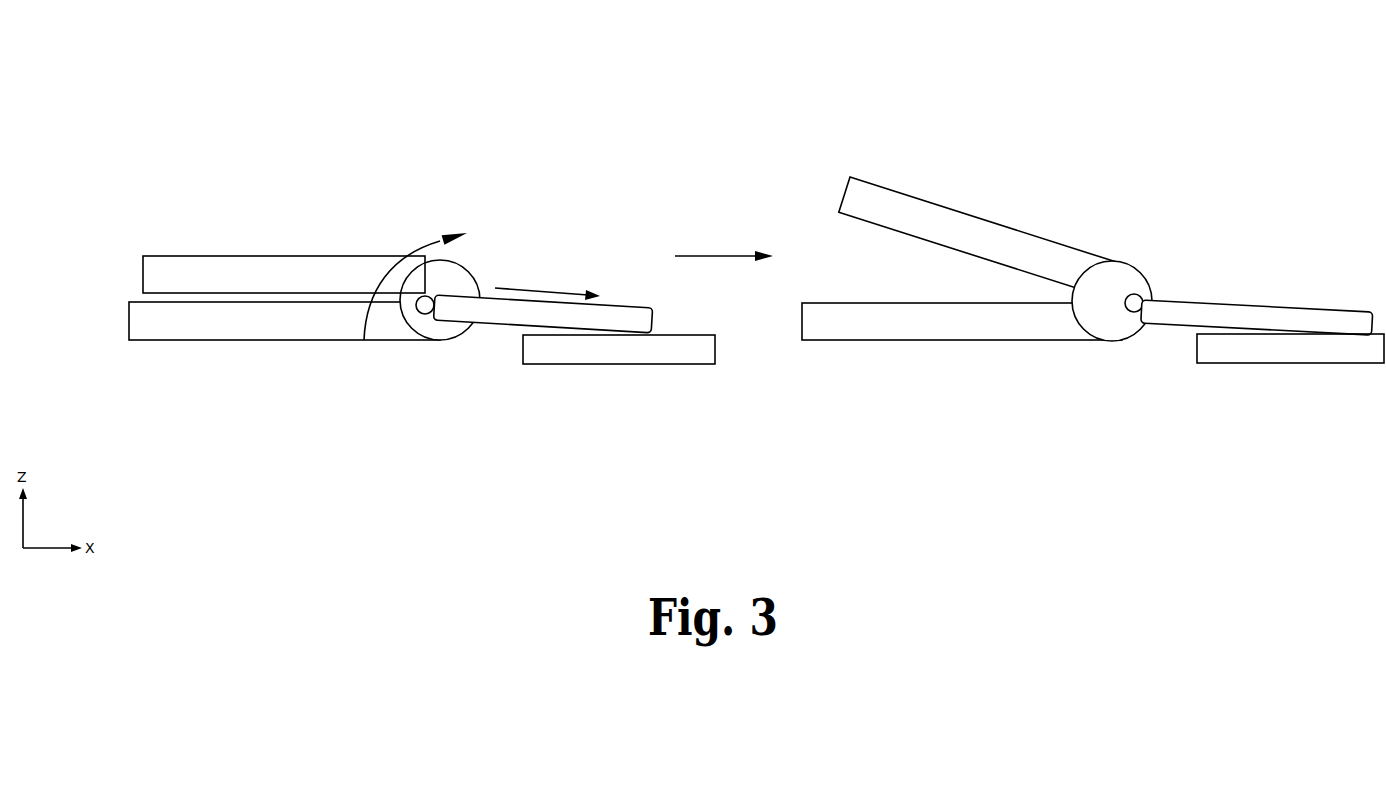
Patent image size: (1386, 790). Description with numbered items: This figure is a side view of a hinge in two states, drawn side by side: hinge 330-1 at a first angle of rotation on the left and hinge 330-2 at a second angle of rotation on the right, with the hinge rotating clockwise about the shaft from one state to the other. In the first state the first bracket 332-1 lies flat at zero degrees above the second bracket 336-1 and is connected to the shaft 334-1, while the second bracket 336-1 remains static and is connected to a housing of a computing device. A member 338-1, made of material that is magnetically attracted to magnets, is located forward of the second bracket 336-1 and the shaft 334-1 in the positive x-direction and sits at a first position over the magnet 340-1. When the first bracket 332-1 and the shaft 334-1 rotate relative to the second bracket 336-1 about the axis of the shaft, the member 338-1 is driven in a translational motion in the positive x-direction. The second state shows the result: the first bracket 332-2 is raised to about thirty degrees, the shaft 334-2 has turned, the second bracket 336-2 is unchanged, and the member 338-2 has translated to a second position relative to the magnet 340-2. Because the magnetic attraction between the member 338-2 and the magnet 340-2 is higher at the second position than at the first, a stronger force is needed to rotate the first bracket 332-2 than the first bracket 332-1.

The hinge 330-1 is at (147, 143).
The hinge 330-2 is at (920, 143).
The first bracket 332-1 is at (289, 268).
The first bracket 332-2 is at (1005, 242).
The shaft 334-1 is at (443, 332).
The shaft 334-2 is at (1117, 285).
The second bracket 336-1 is at (265, 327).
The second bracket 336-2 is at (937, 325).
The member 338-1 is at (497, 310).
The member 338-2 is at (1168, 315).
The magnet 340-1 is at (647, 350).
The magnet 340-2 is at (1318, 350).